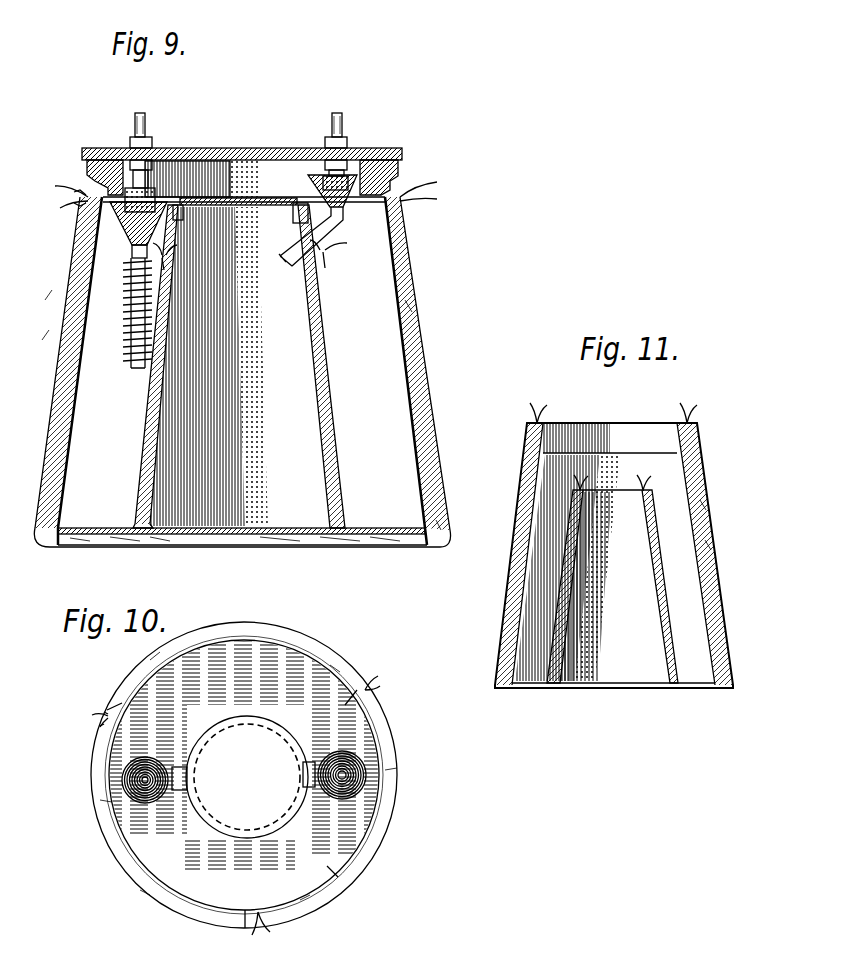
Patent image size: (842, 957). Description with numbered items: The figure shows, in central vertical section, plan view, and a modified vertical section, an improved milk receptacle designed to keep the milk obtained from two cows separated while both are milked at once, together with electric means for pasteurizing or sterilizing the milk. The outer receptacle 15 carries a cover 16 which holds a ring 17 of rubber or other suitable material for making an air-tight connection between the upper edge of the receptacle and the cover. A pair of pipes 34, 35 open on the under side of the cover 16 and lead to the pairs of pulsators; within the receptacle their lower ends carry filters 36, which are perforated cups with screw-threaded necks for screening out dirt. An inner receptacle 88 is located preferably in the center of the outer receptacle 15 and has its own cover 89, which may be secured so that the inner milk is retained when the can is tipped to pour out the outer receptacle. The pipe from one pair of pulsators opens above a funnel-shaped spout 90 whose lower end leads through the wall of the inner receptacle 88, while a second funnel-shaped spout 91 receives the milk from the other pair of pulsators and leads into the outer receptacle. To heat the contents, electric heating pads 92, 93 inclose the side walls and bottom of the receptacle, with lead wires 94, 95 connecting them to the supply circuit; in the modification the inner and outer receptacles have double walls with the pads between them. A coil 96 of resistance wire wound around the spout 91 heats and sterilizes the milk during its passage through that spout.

In FIG. 9, the receptacle 15 is at (392, 279).
In FIG. 10, the receptacle 15 is at (363, 710).
In FIG. 11, the receptacle 15 is at (507, 605).
In FIG. 9, the cover 16 is at (376, 148).
In FIG. 9, the ring 17 is at (398, 160).
In FIG. 9, the pipe 34 is at (145, 118).
In FIG. 9, the pipe 35 is at (342, 115).
In FIG. 9, the filter 36 is at (318, 178).
In FIG. 9, the inner receptacle 88 is at (307, 358).
In FIG. 10, the inner receptacle 88 is at (252, 727).
In FIG. 11, the inner receptacle 88 is at (657, 605).
In FIG. 9, the cover 89 is at (260, 207).
In FIG. 10, the cover 89 is at (250, 807).
In FIG. 9, the funnel-shaped spout 90 is at (340, 218).
In FIG. 10, the funnel-shaped spout 90 is at (352, 782).
In FIG. 9, the funnel-shaped spout 91 is at (120, 226).
In FIG. 10, the funnel-shaped spout 91 is at (150, 797).
In FIG. 9, the electric heating pad 92 is at (418, 362).
In FIG. 10, the electric heating pad 92 is at (118, 847).
In FIG. 11, the electric heating pad 92 is at (707, 520).
In FIG. 9, the electric heating pad 93 is at (253, 534).
In FIG. 9, the lead wire 94 is at (87, 200).
In FIG. 10, the lead wire 94 is at (108, 716).
In FIG. 9, the lead wire 95 is at (87, 197).
In FIG. 10, the lead wire 95 is at (102, 724).
In FIG. 9, the coil 96 is at (122, 367).